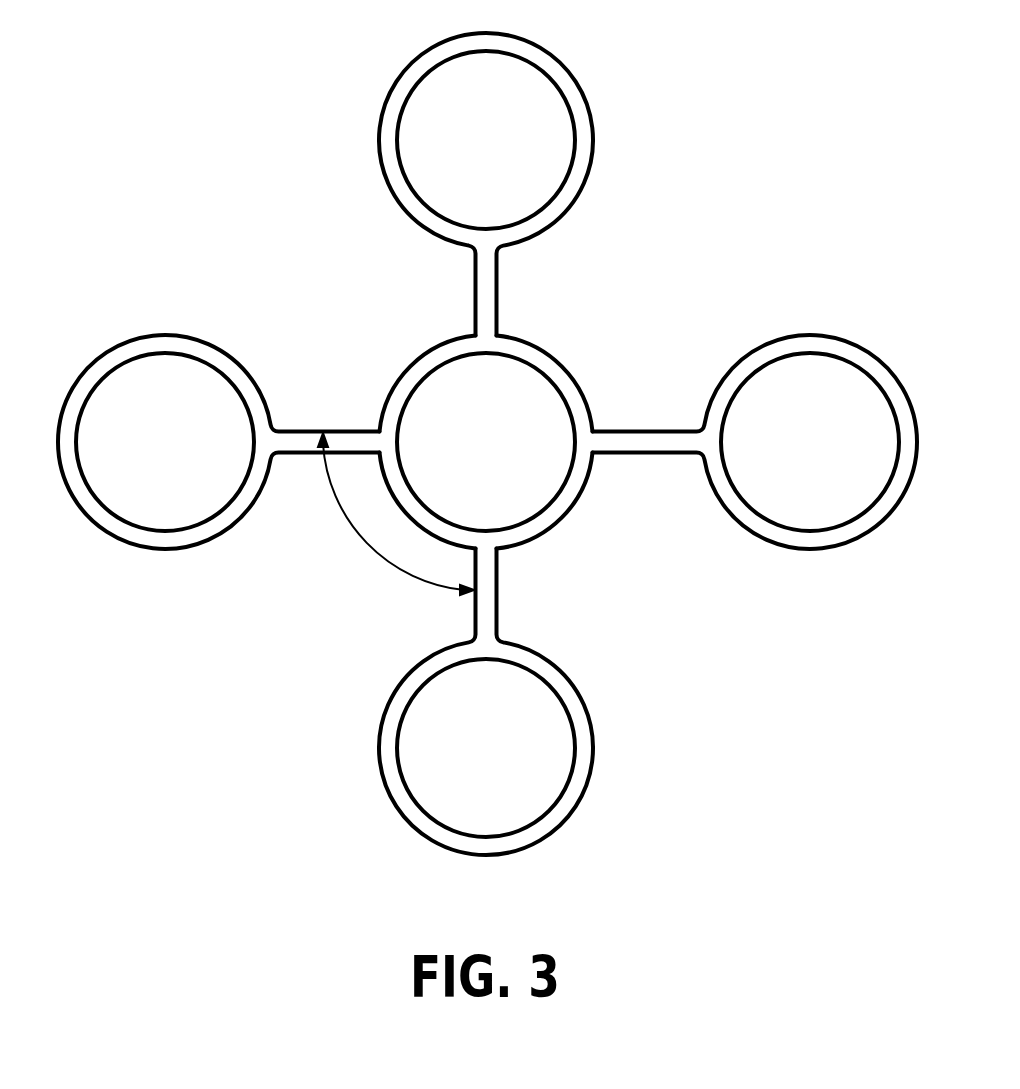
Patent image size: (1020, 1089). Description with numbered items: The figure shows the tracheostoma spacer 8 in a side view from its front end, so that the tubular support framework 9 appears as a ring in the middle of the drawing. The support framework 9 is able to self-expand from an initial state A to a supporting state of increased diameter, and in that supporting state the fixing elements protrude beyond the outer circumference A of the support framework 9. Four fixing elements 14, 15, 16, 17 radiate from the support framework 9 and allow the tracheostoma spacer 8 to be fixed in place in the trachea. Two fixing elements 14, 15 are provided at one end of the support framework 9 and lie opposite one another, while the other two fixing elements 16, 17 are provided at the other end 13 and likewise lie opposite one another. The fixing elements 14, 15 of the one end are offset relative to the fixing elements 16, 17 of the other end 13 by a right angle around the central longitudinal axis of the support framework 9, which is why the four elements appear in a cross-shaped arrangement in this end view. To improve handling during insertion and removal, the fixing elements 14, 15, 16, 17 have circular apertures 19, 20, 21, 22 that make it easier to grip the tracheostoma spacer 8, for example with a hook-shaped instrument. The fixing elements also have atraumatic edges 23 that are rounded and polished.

The tracheostoma spacer 8 is at (487, 476).
The support framework 9 is at (459, 413).
The end of the support framework 13 is at (572, 490).
The fixing element 14 is at (390, 140).
The fixing element 15 is at (386, 752).
The fixing element 16 is at (806, 345).
The fixing element 17 is at (165, 348).
The circular aperture 19 is at (448, 184).
The circular aperture 20 is at (445, 702).
The circular aperture 21 is at (755, 403).
The circular aperture 22 is at (219, 403).
The atraumatic edges 23 is at (487, 476).
The initial state / outer circumference A is at (390, 384).